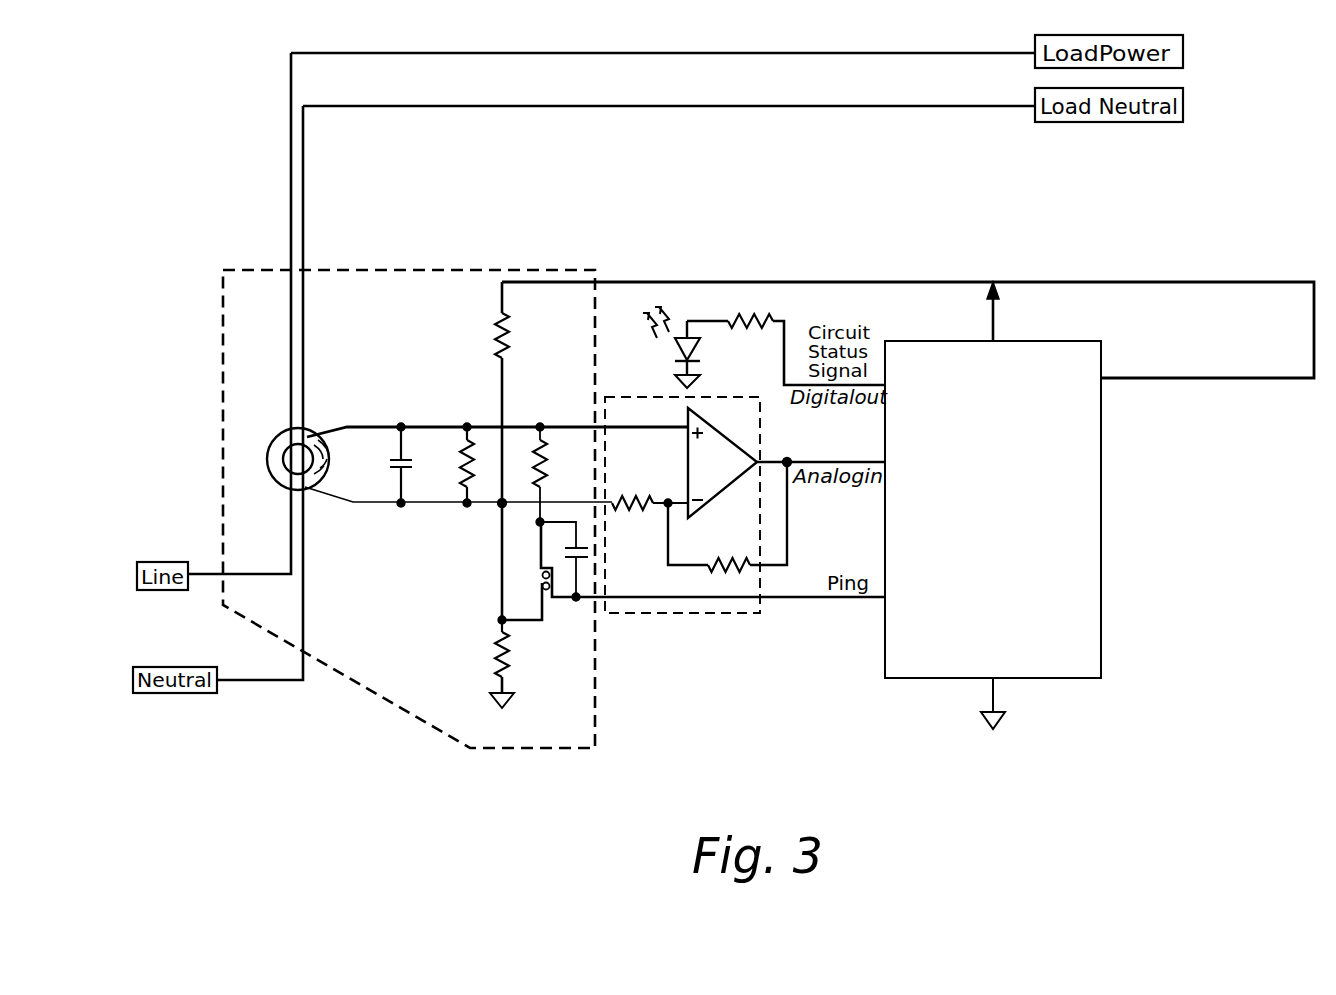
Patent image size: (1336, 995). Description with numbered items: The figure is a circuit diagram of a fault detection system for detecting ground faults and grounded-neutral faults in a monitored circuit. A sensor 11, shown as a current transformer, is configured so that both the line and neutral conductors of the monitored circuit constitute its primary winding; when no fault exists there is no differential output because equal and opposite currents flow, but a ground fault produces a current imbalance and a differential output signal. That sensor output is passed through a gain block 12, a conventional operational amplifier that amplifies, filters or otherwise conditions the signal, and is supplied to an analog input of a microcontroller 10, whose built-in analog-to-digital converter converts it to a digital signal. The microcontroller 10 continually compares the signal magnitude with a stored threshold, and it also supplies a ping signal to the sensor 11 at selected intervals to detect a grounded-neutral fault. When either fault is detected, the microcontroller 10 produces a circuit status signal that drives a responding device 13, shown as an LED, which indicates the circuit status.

The microcontroller 10 is at (1007, 523).
The sensor 11 is at (363, 687).
The gain block 12 is at (685, 613).
The responding device 13 is at (698, 345).